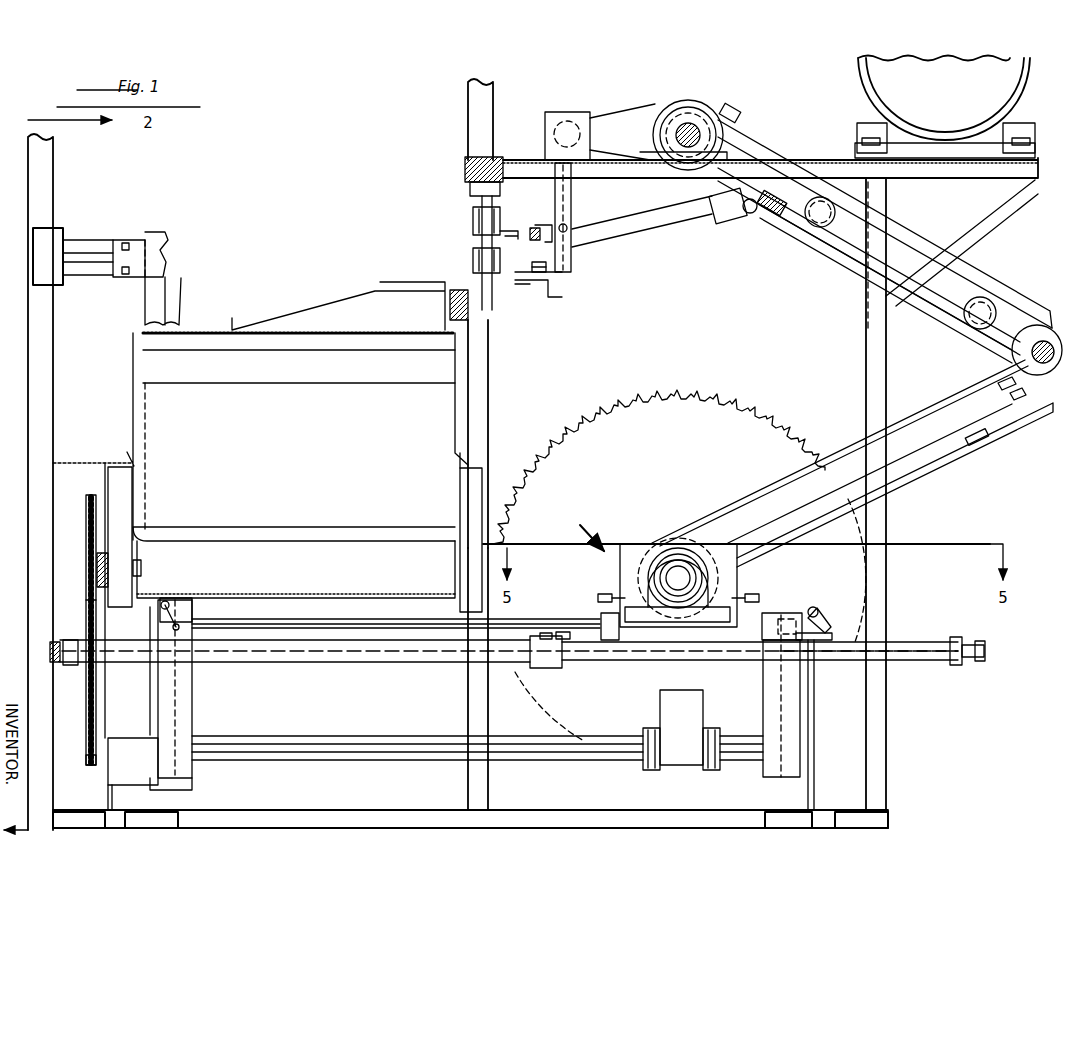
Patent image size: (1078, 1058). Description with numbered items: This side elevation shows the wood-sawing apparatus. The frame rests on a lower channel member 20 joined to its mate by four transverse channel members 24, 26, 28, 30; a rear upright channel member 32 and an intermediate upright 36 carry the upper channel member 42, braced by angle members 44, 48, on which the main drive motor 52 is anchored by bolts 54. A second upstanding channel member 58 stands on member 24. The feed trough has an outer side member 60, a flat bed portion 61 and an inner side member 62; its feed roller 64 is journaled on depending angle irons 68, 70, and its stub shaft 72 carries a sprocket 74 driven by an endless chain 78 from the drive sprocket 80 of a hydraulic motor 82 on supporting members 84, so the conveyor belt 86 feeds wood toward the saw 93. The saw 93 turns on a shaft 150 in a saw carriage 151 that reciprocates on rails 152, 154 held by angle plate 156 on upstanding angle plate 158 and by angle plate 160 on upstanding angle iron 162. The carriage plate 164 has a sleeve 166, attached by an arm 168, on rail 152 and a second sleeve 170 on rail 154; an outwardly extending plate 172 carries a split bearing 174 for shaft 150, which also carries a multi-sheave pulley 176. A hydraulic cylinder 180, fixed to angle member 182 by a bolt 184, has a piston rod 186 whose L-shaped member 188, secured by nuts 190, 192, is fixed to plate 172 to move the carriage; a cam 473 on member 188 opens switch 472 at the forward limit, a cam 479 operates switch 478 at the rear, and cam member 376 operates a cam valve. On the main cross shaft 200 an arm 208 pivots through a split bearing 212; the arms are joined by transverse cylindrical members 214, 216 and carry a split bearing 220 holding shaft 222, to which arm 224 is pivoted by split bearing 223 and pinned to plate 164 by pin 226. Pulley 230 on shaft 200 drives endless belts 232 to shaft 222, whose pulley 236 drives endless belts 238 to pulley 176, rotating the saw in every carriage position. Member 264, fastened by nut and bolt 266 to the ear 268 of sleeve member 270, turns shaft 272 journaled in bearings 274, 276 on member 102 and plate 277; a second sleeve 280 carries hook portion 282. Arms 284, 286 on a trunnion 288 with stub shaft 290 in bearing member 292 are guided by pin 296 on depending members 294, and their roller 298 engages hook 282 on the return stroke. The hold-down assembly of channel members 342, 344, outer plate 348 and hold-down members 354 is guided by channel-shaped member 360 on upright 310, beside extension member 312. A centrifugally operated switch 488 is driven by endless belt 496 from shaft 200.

The lower channel member 20 is at (298, 818).
The transverse channel member 24 is at (54, 814).
The transverse channel member 26 is at (186, 817).
The transverse channel member 28 is at (768, 818).
The transverse channel member 30 is at (890, 816).
The upwardly extending channel member 32 is at (887, 730).
The upstanding channel member 36 is at (490, 792).
The channel member 42 is at (829, 160).
The angle member 44 is at (831, 281).
The angle member 48 is at (966, 243).
The main drive motor 52 is at (945, 107).
The bolt 54 is at (1024, 146).
The upstanding channel member 58 is at (57, 500).
The outer upstanding side member 60 is at (140, 462).
The flat bed portion 61 is at (275, 540).
The inner side member 62 is at (466, 460).
The feed roller 64 is at (296, 569).
The depending angle iron 68 is at (480, 482).
The depending angle iron 70 is at (122, 496).
The stub shaft 72 is at (142, 568).
The sprocket 74 is at (100, 572).
The endless chain 78 is at (88, 613).
The drive sprocket 80 is at (88, 765).
The hydraulic motor 82 is at (133, 761).
The supporting member 84 is at (112, 799).
The endless conveyor belt 86 is at (210, 610).
The saw 93 is at (659, 467).
The member 102 is at (462, 290).
The shaft 150 is at (692, 568).
The saw carriage 151 is at (574, 531).
The rail 152 is at (343, 737).
The rail 154 is at (326, 631).
The angle plate 156 is at (193, 694).
The upstanding angle plate 158 is at (188, 787).
The angle plate 160 is at (792, 613).
The upstanding angle iron 162 is at (812, 777).
The plate 164 is at (629, 548).
The sleeve 166 is at (650, 771).
The arm 168 is at (690, 700).
The sleeve 170 is at (600, 605).
The outwardly extending plate 172 is at (668, 632).
The split bearing 174 is at (632, 592).
The multi-sheave pulley 176 is at (659, 553).
The hydraulic cylinder 180 is at (297, 663).
The angle member 182 is at (60, 665).
The bolt 184 is at (50, 648).
The piston rod 186 is at (596, 668).
The L-shaped member 188 is at (906, 642).
The nut 190 is at (952, 666).
The nut 192 is at (970, 666).
The shaft 200 is at (676, 134).
The arm 208 is at (898, 253).
The split bearing 212 is at (733, 106).
The transverse cylindrical member 214 is at (812, 236).
The transverse cylindrical member 216 is at (1000, 306).
The split bearing 220 is at (1000, 384).
The shaft 222 is at (1012, 396).
The split bearing 223 is at (972, 428).
The arm 224 is at (965, 449).
The pin 226 is at (745, 540).
The multi-sheave pulley 230 is at (682, 101).
The endless belt 232 is at (893, 226).
The multi-sheave pulley 236 is at (975, 353).
The endless belt 238 is at (836, 452).
The inwardly extending member 264 is at (560, 282).
The nut and bolt 266 is at (547, 268).
The ear 268 is at (523, 286).
The sleeve member 270 is at (472, 253).
The shaft 272 is at (498, 305).
The bearing 274 is at (500, 325).
The bearing 276 is at (501, 190).
The plate 277 is at (464, 175).
The sleeve 280 is at (472, 215).
The hook portion 282 is at (516, 240).
The arm 284 is at (630, 234).
The arm 286 is at (640, 221).
The trunnion 288 is at (728, 224).
The stub shaft 290 is at (751, 214).
The bearing member 292 is at (782, 208).
The depending member 294 is at (572, 207).
The pin 296 is at (568, 226).
The roller 298 is at (550, 226).
The upstanding extending member 310 is at (55, 183).
The extension member 312 is at (472, 121).
The channel member 342 is at (92, 241).
The channel member 344 is at (92, 264).
The outer plate 348 is at (143, 241).
The hold-down member 354 is at (148, 306).
The channel-shaped member 360 is at (60, 228).
The cam member 376 is at (540, 637).
The normally closed switch 472 is at (190, 609).
The cam 473 is at (600, 626).
The switch 478 is at (830, 620).
The cam 479 is at (815, 664).
The centrifugally operated switch 488 is at (558, 112).
The endless belt 496 is at (612, 114).